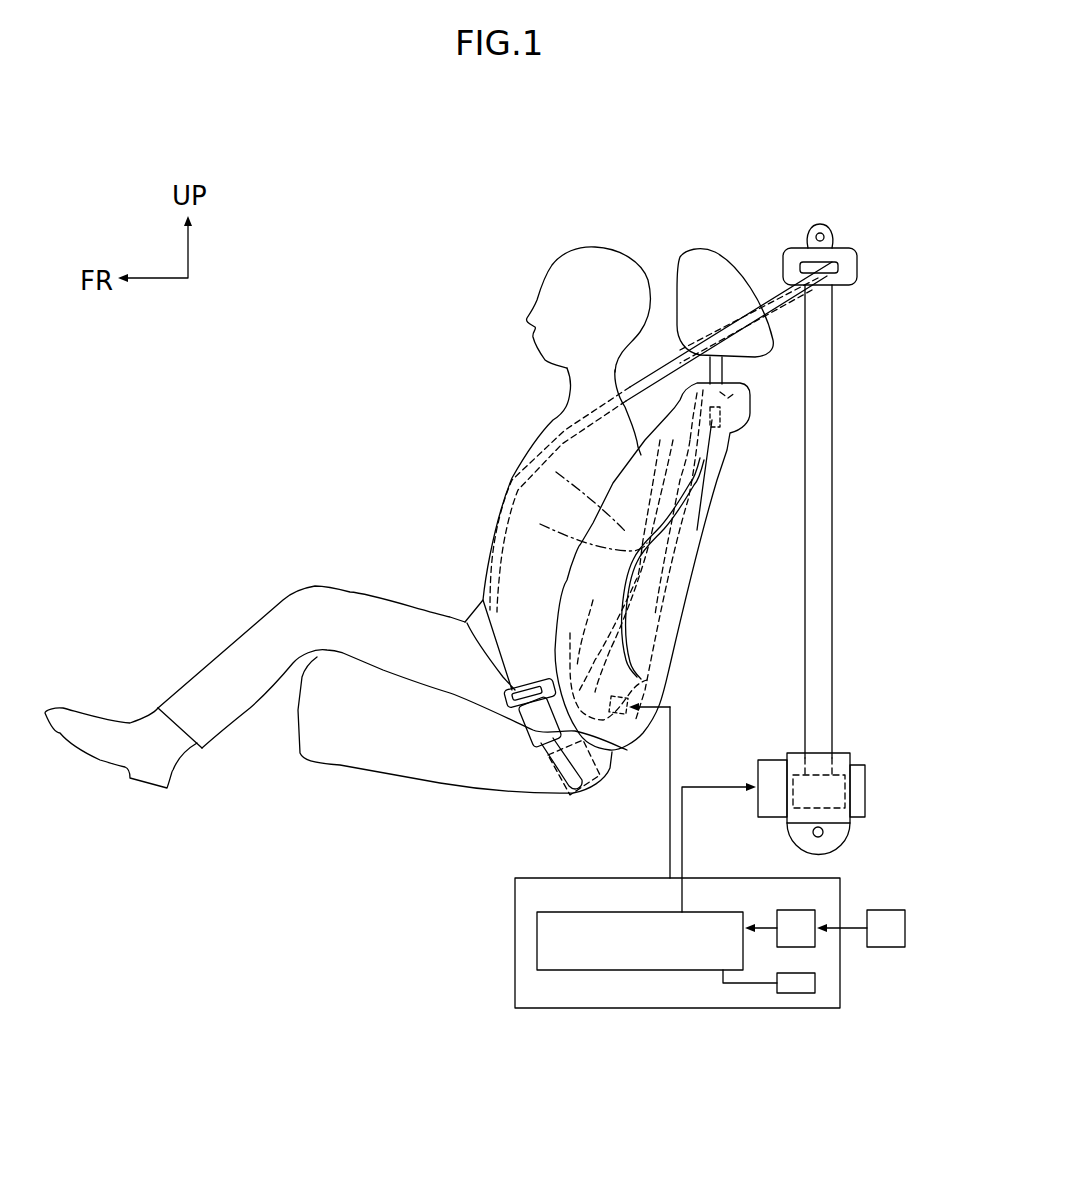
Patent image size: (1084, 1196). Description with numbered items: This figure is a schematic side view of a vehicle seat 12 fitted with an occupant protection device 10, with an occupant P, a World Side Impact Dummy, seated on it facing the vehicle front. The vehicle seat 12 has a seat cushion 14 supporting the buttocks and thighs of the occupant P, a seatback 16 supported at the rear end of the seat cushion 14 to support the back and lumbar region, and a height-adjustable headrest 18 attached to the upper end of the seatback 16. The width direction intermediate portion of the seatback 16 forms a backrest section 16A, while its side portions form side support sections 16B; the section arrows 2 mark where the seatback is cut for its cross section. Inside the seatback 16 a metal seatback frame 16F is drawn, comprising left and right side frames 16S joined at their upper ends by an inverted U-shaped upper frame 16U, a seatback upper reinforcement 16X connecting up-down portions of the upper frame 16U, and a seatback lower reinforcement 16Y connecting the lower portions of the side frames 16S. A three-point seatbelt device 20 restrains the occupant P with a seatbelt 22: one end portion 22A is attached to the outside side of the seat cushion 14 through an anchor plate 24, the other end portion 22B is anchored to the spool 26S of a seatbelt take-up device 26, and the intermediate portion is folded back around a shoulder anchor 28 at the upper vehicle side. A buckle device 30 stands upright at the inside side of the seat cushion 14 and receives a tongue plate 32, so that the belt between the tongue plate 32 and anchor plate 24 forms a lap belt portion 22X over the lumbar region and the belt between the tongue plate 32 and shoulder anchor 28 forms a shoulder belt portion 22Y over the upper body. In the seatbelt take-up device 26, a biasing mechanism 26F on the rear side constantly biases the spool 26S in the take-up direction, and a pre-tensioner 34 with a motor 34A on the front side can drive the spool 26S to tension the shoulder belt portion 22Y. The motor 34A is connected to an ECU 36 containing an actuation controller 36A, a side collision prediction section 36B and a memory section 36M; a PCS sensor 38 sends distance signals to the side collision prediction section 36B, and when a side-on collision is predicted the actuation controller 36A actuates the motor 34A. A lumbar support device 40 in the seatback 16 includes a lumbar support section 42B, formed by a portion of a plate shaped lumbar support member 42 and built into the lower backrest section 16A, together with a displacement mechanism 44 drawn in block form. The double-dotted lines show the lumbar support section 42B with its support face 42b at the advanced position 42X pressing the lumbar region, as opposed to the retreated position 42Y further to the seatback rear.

The occupant protection device 10 is at (908, 380).
The vehicle seat 12 is at (747, 184).
The seat cushion 14 is at (293, 724).
The seatback 16 is at (734, 455).
The backrest section 16A is at (645, 471).
The side support section 16B is at (572, 606).
The seatback frame 16F is at (713, 478).
The side frames 16S is at (700, 498).
The upper frame 16U is at (722, 384).
The seatback upper reinforcement 16X is at (735, 428).
The seatback lower reinforcement 16Y is at (647, 680).
The headrest 18 is at (686, 257).
The three-point seatbelt device 20 is at (862, 316).
The seatbelt 22 is at (838, 368).
The one end portion 22A is at (548, 757).
The other end portion 22B is at (821, 762).
The lap belt portion 22X is at (463, 628).
The shoulder belt portion 22Y is at (483, 600).
The anchor plate 24 is at (577, 795).
The seatbelt take-up device 26 is at (869, 745).
The biasing mechanism 26F is at (866, 772).
The spool 26S is at (838, 822).
The shoulder anchor 28 is at (848, 250).
The buckle device 30 is at (537, 726).
The tongue plate 32 is at (510, 692).
The pre-tensioner 34 is at (744, 816).
The motor 34A is at (771, 760).
The ECU 36 is at (652, 880).
The actuation controller 36A is at (537, 937).
The side collision prediction section 36B is at (800, 910).
The memory section 36M is at (816, 988).
The PCS sensor 38 is at (888, 910).
The lumbar support device 40 is at (670, 578).
The lumbar support member 42 is at (667, 548).
The lumbar support section 42B is at (620, 577).
The support face 42b is at (556, 472).
The advanced position 42X is at (593, 537).
The retreated position 42Y is at (591, 502).
The displacement mechanism 44 is at (630, 715).
The section line 2- 2 is at (480, 530).
The occupant P is at (525, 412).